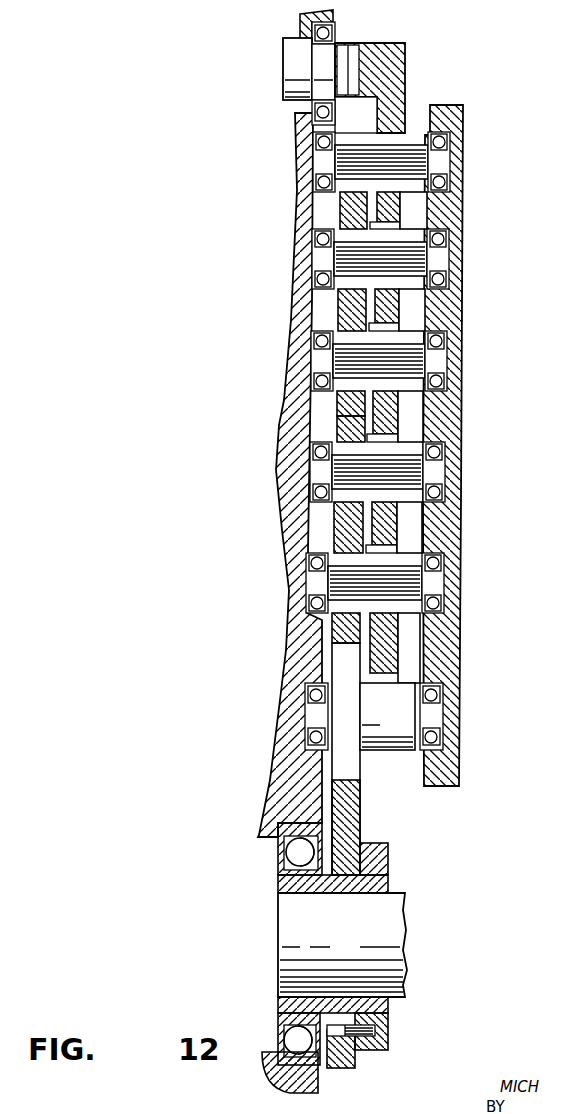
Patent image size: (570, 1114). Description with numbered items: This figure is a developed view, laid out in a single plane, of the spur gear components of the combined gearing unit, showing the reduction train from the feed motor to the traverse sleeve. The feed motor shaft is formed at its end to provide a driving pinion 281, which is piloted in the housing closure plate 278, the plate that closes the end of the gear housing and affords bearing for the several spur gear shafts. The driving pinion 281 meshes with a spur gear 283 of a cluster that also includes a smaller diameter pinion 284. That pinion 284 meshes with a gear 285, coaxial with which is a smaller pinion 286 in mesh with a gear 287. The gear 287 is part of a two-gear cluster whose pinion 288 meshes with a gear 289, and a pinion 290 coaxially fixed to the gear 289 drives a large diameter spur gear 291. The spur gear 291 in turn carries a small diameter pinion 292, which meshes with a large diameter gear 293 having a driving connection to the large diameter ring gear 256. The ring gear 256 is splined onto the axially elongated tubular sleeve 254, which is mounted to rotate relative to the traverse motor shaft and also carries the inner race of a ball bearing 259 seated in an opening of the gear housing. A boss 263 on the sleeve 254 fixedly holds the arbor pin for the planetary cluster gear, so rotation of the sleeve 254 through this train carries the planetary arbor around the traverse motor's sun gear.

The closure plate 278 is at (443, 663).
The driving pinion 281 is at (398, 77).
The spur gear 283 is at (400, 208).
The pinion 284 is at (362, 211).
The gear 285 is at (347, 303).
The pinion 286 is at (405, 303).
The gear 287 is at (400, 408).
The pinion 288 is at (345, 403).
The gear 289 is at (345, 418).
The pinion 290 is at (400, 500).
The large diameter spur gear 291 is at (400, 647).
The small diameter pinion 292 is at (336, 624).
The large diameter gear 293 is at (350, 782).
The sleeve 254 is at (330, 890).
The ring gear 256 is at (357, 833).
The ball bearing 259 is at (297, 853).
The boss 263 is at (383, 858).